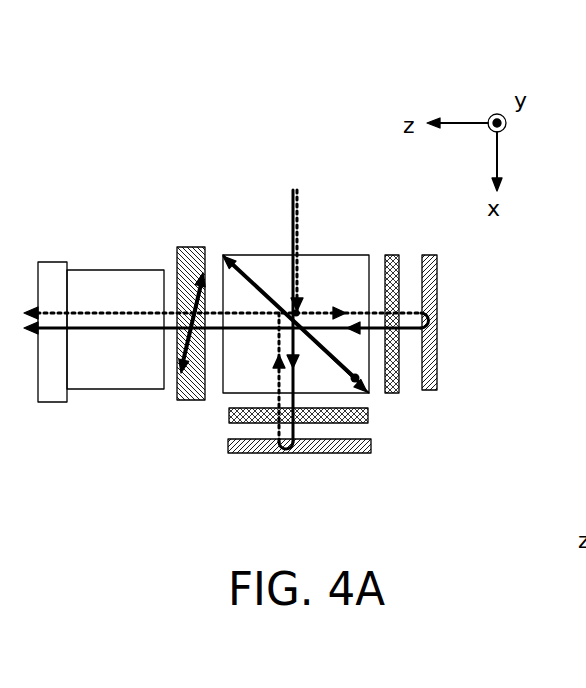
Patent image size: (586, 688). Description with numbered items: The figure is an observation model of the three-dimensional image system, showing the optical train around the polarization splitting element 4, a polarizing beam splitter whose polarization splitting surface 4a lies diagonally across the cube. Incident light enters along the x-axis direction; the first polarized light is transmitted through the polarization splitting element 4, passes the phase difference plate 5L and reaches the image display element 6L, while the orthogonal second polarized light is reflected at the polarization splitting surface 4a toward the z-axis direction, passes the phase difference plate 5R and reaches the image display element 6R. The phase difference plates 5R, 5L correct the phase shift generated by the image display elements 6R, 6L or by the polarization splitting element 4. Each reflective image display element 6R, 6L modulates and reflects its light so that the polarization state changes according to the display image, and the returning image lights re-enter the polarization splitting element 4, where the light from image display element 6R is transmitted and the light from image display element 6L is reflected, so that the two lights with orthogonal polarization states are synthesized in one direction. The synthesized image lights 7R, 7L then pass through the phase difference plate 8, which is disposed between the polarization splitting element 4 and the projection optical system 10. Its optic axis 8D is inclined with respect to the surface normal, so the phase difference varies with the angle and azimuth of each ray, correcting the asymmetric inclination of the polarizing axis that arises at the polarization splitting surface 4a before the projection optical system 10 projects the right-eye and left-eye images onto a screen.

The polarization splitting element 4 is at (353, 261).
The polarization splitting surface 4a is at (358, 380).
The phase difference plate 5L is at (367, 413).
The phase difference plate 5R is at (390, 288).
The image display element 6L is at (325, 453).
The image display element 6R is at (440, 333).
The synthesized image light 7L is at (237, 312).
The synthesized image light 7R is at (228, 330).
The phase difference plate 8 is at (192, 398).
The optic axis 8D is at (201, 247).
The projection optical system 10 is at (119, 280).